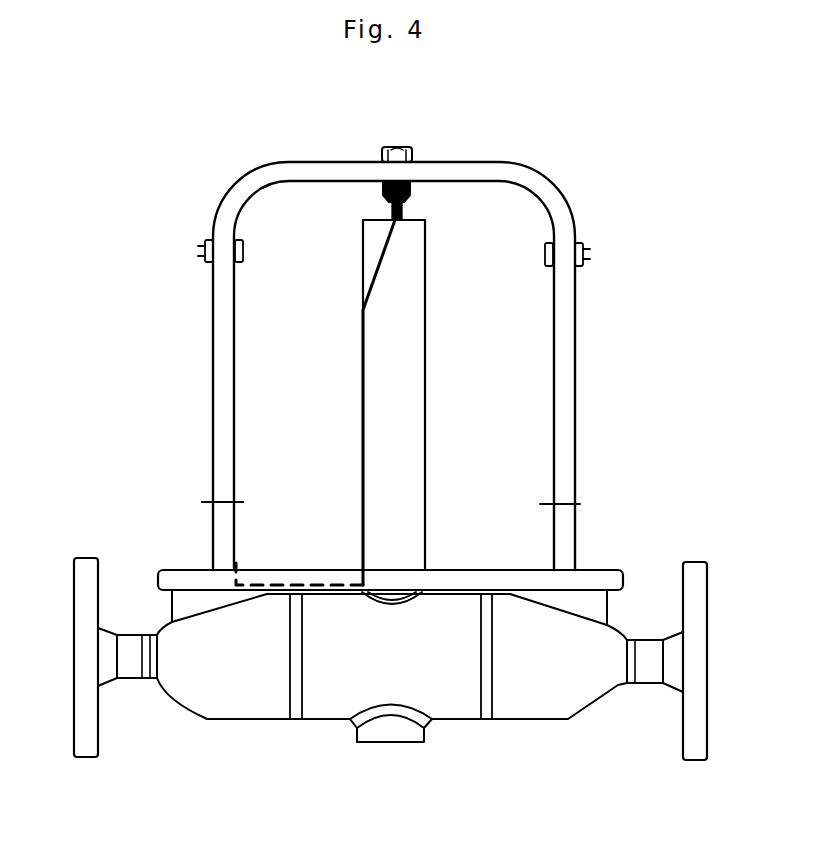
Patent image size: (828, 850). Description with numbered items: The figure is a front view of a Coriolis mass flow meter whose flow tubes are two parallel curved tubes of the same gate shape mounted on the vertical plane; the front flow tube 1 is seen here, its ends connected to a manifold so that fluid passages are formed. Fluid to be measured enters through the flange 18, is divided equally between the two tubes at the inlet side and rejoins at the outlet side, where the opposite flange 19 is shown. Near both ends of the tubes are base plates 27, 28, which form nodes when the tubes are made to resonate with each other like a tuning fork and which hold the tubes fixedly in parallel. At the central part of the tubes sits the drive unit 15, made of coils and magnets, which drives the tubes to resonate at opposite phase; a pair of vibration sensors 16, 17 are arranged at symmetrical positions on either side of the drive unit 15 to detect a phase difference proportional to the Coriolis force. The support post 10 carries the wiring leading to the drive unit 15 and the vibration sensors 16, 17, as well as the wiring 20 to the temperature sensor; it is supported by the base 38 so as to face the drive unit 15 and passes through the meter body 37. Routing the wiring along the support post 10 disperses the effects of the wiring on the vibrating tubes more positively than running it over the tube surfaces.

The flow tube 1 is at (567, 388).
The support post 10 is at (407, 415).
The drive unit 15 is at (410, 147).
The vibration sensor 16 is at (212, 238).
The vibration sensor 17 is at (580, 238).
The flange 18 is at (90, 580).
The right pipe flange 19 is at (683, 590).
The wiring to the temperature sensor 20 is at (372, 253).
The base plate 27 is at (222, 498).
The base plate 28 is at (568, 495).
The meter body 37 is at (528, 698).
The base 38 is at (448, 573).